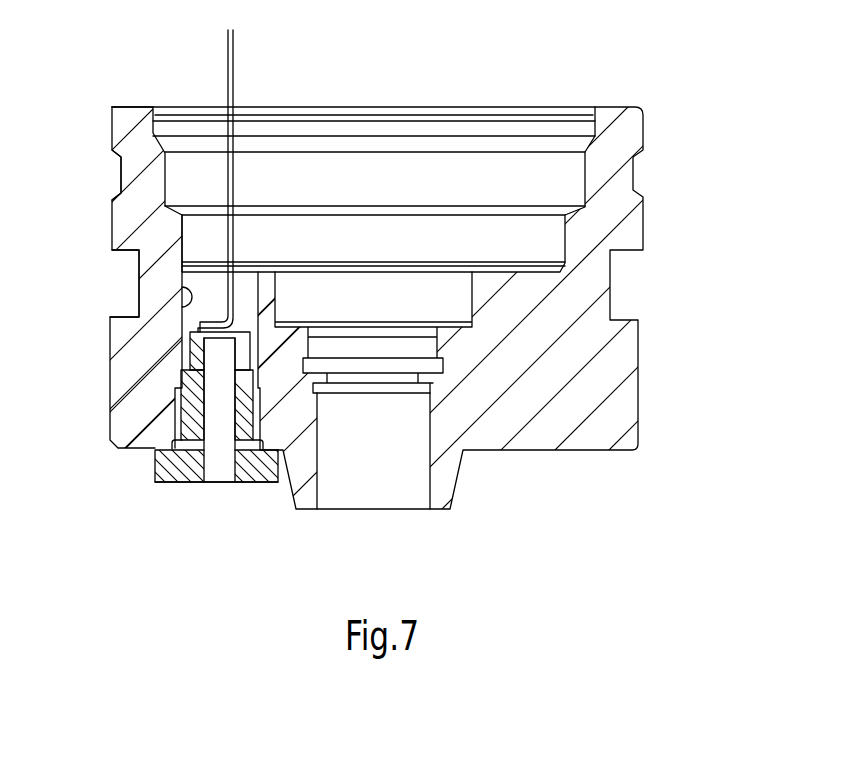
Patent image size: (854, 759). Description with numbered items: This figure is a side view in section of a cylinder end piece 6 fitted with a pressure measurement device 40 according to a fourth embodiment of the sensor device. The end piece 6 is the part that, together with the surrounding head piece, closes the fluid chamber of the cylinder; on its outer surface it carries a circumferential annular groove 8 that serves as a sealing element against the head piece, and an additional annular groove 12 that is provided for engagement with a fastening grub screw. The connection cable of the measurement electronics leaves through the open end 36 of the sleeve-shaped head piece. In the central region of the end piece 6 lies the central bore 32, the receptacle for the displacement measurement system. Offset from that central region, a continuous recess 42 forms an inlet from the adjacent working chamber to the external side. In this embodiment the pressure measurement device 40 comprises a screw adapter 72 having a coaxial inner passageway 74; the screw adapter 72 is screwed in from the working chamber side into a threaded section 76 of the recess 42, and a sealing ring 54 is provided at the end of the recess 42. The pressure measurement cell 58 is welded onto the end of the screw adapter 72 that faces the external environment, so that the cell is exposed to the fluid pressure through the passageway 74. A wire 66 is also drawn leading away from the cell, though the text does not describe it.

The cylinder end piece 6 is at (612, 372).
The circumferential annular groove 8 is at (122, 251).
The additional annular groove 12 is at (110, 157).
The central bore 32 is at (438, 457).
The open end 36 is at (132, 107).
The pressure measurement device 40 is at (176, 505).
The recess 42 is at (188, 331).
The sealing ring 54 is at (172, 447).
The pressure measurement cell 58 is at (240, 357).
The wire 66 is at (227, 57).
The screw adapter 72 is at (157, 478).
The coaxial inner passageway 74 is at (232, 444).
The threaded section 76 is at (176, 397).